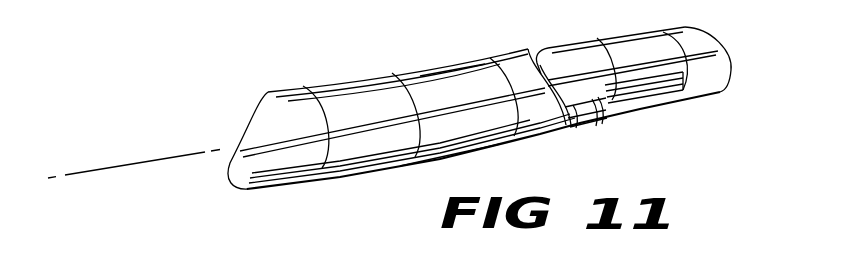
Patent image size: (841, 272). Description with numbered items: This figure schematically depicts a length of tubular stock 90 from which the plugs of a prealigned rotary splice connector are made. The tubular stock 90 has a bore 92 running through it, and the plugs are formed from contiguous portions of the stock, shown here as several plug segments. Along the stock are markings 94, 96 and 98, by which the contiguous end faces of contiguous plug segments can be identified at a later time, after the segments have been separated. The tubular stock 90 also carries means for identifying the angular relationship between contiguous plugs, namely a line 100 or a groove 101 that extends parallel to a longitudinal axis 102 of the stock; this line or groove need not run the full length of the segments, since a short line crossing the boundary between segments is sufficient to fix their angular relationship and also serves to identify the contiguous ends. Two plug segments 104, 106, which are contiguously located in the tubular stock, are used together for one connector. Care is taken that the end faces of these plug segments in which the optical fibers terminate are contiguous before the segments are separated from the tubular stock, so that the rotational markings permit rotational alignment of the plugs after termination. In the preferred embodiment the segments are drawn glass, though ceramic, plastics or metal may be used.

The tubular stock 90 is at (433, 76).
The bore 92 is at (253, 146).
The marking 94 is at (393, 74).
The marking 96 is at (507, 70).
The marking 98 is at (607, 38).
The line 100 is at (549, 132).
The groove 101 is at (594, 112).
The longitudinal axis 102 is at (117, 163).
The plug segment 104 is at (327, 82).
The plug segment 106 is at (437, 156).